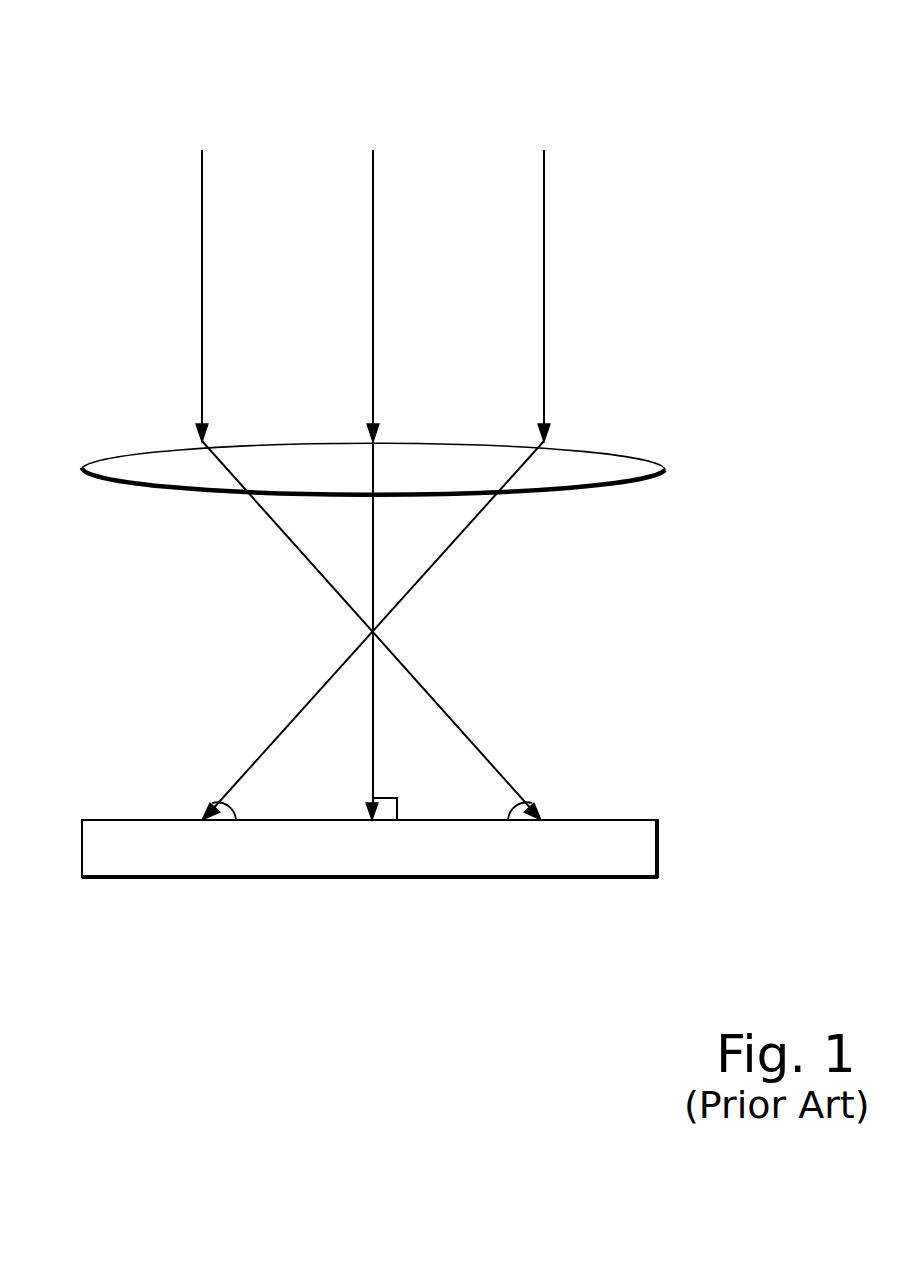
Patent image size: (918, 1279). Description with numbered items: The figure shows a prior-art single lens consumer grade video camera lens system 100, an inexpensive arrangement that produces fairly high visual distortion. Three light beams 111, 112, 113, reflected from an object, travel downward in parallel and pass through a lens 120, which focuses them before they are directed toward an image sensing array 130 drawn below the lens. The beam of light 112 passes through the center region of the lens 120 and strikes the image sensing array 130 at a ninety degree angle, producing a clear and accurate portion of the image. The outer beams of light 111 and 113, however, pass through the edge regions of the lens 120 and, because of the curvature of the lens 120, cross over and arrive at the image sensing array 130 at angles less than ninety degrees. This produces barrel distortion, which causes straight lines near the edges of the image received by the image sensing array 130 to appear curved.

The single lens consumer grade video camera lens system 100 is at (697, 48).
The light beam 111 is at (203, 283).
The light beam 112 is at (374, 283).
The light beam 113 is at (545, 283).
The lens 120 is at (666, 470).
The image sensing array 130 is at (661, 858).